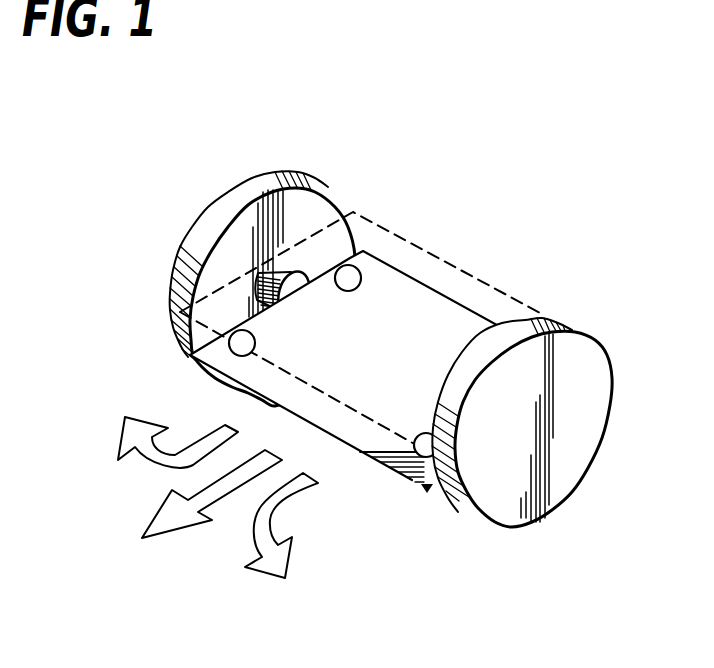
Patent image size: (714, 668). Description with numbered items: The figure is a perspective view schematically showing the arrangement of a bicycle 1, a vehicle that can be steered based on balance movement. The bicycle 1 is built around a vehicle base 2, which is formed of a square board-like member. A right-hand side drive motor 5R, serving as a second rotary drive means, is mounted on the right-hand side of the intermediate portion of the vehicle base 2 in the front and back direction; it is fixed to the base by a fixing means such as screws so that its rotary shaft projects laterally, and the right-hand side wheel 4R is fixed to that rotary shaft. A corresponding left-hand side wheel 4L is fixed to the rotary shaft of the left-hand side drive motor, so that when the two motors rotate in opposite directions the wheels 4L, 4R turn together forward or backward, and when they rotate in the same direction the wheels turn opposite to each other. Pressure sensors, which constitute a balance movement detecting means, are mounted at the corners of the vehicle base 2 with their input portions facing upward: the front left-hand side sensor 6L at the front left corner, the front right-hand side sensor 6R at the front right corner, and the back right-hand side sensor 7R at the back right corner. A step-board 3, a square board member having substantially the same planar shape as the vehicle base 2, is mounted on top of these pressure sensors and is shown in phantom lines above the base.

The bicycle 1 is at (372, 168).
The vehicle base 2 is at (367, 459).
The step-board 3 is at (485, 278).
The right-hand side wheel 4R is at (235, 203).
The left-hand side wheel 4L is at (558, 478).
The right-hand side drive motor 5R is at (260, 273).
The front right-hand side sensor 6R is at (237, 360).
The front left-hand side sensor 6L is at (417, 468).
The back right-hand side sensor 7R is at (358, 268).